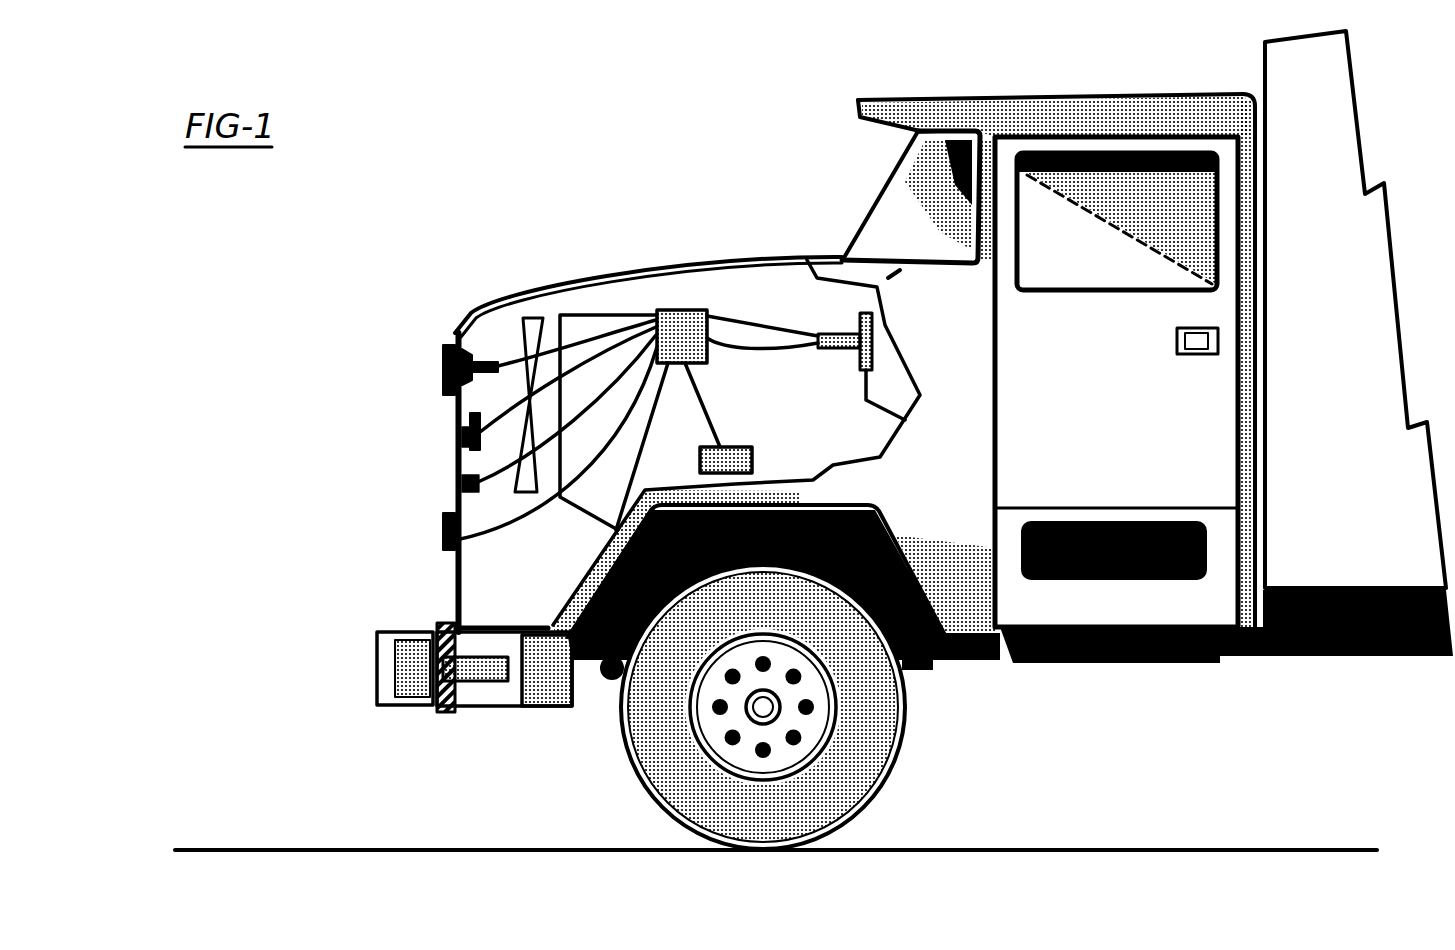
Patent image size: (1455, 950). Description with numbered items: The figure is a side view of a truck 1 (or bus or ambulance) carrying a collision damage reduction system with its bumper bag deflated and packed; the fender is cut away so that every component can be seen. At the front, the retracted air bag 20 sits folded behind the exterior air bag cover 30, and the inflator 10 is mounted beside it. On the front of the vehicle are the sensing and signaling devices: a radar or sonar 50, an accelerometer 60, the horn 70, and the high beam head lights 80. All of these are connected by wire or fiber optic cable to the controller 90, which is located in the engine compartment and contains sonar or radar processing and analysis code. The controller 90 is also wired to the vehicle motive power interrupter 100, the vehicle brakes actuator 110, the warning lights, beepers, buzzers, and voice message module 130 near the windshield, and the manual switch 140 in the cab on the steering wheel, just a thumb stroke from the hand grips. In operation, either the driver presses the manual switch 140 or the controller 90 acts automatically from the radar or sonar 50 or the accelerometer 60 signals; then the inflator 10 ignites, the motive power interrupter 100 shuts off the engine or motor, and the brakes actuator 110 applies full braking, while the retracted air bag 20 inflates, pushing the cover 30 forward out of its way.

The truck 1 is at (1210, 608).
The inflator 10 is at (482, 706).
The retracted air bag 20 is at (377, 668).
The exterior air bag cover 30 is at (402, 632).
The radar or sonar 50 is at (455, 530).
The accelerometer 60 is at (462, 483).
The horn 70 is at (462, 427).
The high beam head lights 80 is at (443, 372).
The controller 90 is at (682, 310).
The vehicle motive power interrupter 100 is at (755, 447).
The vehicle brakes actuator 110 is at (818, 336).
The warning lights, beepers, buzzers, and voice message module 130 is at (923, 257).
The manual switch 140 is at (1040, 283).